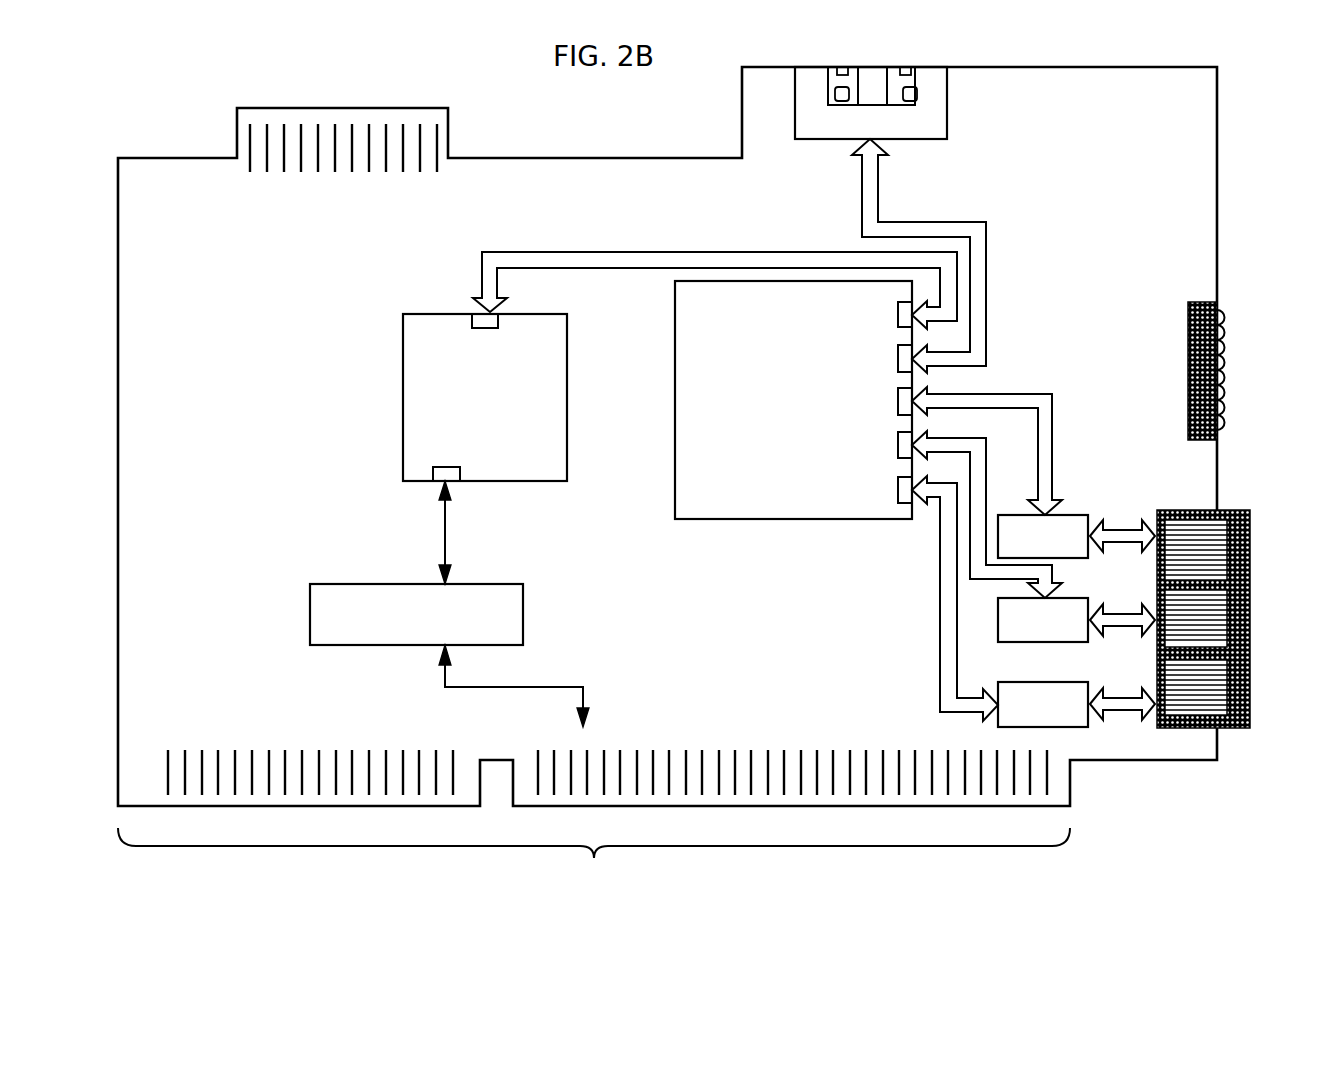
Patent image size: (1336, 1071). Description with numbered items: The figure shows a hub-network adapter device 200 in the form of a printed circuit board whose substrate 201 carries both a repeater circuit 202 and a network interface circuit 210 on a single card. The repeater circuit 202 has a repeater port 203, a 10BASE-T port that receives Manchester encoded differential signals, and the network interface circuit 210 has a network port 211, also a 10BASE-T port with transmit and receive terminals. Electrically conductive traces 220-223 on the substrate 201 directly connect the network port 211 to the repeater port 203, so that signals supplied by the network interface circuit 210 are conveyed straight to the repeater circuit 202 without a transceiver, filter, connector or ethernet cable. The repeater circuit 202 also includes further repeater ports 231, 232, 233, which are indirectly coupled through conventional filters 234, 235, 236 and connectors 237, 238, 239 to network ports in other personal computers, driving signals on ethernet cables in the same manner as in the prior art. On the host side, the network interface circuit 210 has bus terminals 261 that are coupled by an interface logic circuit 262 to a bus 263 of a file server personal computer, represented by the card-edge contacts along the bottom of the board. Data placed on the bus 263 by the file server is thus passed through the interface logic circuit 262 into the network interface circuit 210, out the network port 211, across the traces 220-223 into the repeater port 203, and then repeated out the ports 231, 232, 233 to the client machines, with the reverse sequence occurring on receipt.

The hub-network adapter device 200 is at (250, 84).
The substrate 201 is at (763, 85).
The repeater circuit 202 is at (793, 400).
The repeater port 203 is at (897, 315).
The network interface circuit 210 is at (407, 363).
The network port 211 is at (472, 316).
The electrically conductive traces 220-223 is at (612, 258).
The repeater port 231 is at (897, 404).
The repeater port 232 is at (897, 447).
The repeater port 233 is at (897, 491).
The filter 234 is at (1070, 520).
The filter 235 is at (1070, 604).
The filter 236 is at (1070, 688).
The connector 237 is at (1252, 537).
The connector 238 is at (1252, 615).
The connector 239 is at (1252, 714).
The bus terminals 261 is at (457, 477).
The interface logic circuit 262 is at (518, 600).
The bus 263 is at (594, 864).